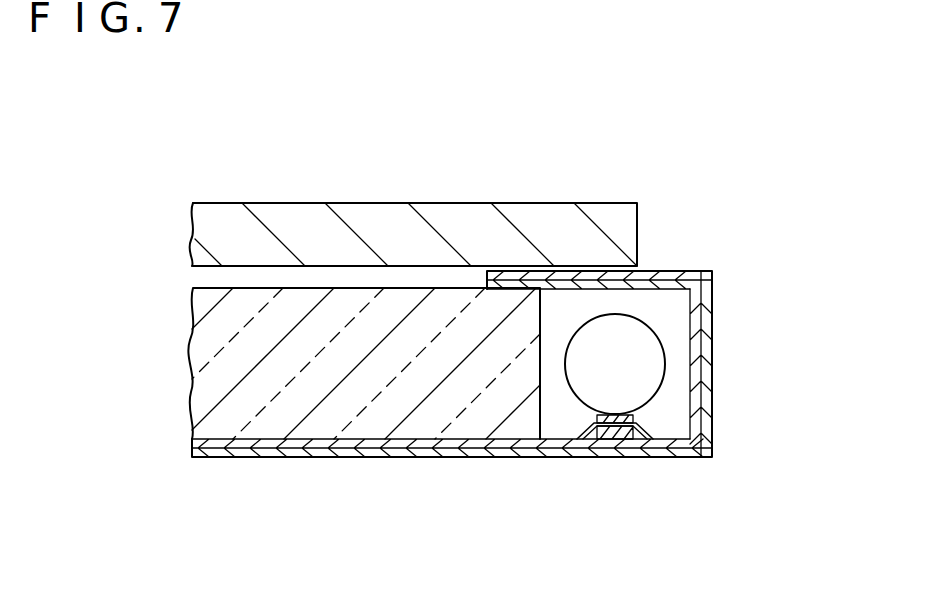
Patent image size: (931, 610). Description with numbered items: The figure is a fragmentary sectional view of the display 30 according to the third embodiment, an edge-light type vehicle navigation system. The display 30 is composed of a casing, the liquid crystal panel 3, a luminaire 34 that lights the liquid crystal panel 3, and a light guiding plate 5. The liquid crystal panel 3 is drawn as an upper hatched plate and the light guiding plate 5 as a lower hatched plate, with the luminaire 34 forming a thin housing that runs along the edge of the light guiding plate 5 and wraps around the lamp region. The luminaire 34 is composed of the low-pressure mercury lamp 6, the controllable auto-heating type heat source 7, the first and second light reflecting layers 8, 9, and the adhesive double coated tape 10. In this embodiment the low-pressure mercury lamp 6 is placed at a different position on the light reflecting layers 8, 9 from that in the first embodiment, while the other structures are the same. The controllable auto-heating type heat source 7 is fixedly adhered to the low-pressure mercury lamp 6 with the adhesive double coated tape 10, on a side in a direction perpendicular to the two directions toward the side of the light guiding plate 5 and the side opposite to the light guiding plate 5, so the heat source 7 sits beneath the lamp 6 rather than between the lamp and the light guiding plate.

The liquid crystal panel 3 is at (362, 220).
The light guiding plate 5 is at (231, 418).
The low-pressure mercury lamp 6 is at (653, 330).
The controllable auto-heating type heat source 7 is at (620, 447).
The first light reflecting layer 8 is at (578, 433).
The second light reflecting layer 9 is at (590, 452).
The adhesive double coated tape 10 is at (636, 418).
The display 30 is at (728, 134).
The luminaire 34 is at (724, 468).